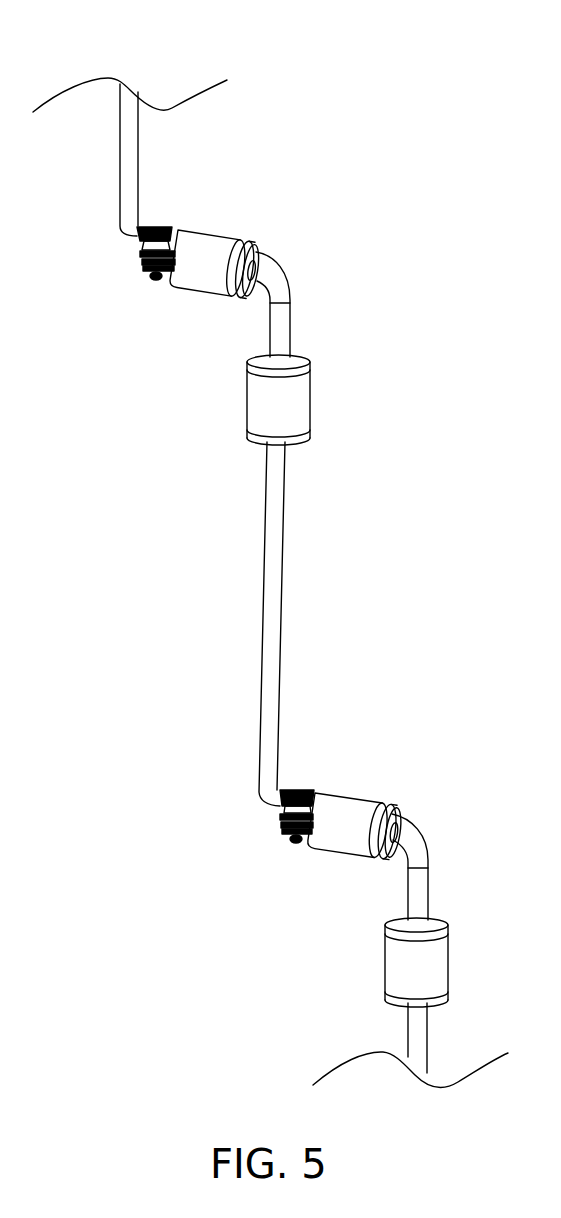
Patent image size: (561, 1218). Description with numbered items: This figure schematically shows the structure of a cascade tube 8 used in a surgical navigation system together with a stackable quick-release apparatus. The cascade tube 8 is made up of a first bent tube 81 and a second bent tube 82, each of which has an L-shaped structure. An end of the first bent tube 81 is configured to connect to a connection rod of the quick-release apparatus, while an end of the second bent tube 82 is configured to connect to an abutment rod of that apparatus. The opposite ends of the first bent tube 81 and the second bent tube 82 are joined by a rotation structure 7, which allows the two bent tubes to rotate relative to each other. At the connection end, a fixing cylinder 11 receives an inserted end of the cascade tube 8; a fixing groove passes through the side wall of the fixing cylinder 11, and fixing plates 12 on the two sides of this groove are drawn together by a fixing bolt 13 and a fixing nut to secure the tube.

The rotation structure 7 is at (285, 405).
The cascade tube 8 is at (107, 635).
The first bent tube 81 is at (130, 157).
The second bent tube 82 is at (280, 327).
The fixing cylinder 11 is at (178, 240).
The fixing plate 12 is at (138, 265).
The fixing bolt 13 is at (120, 217).